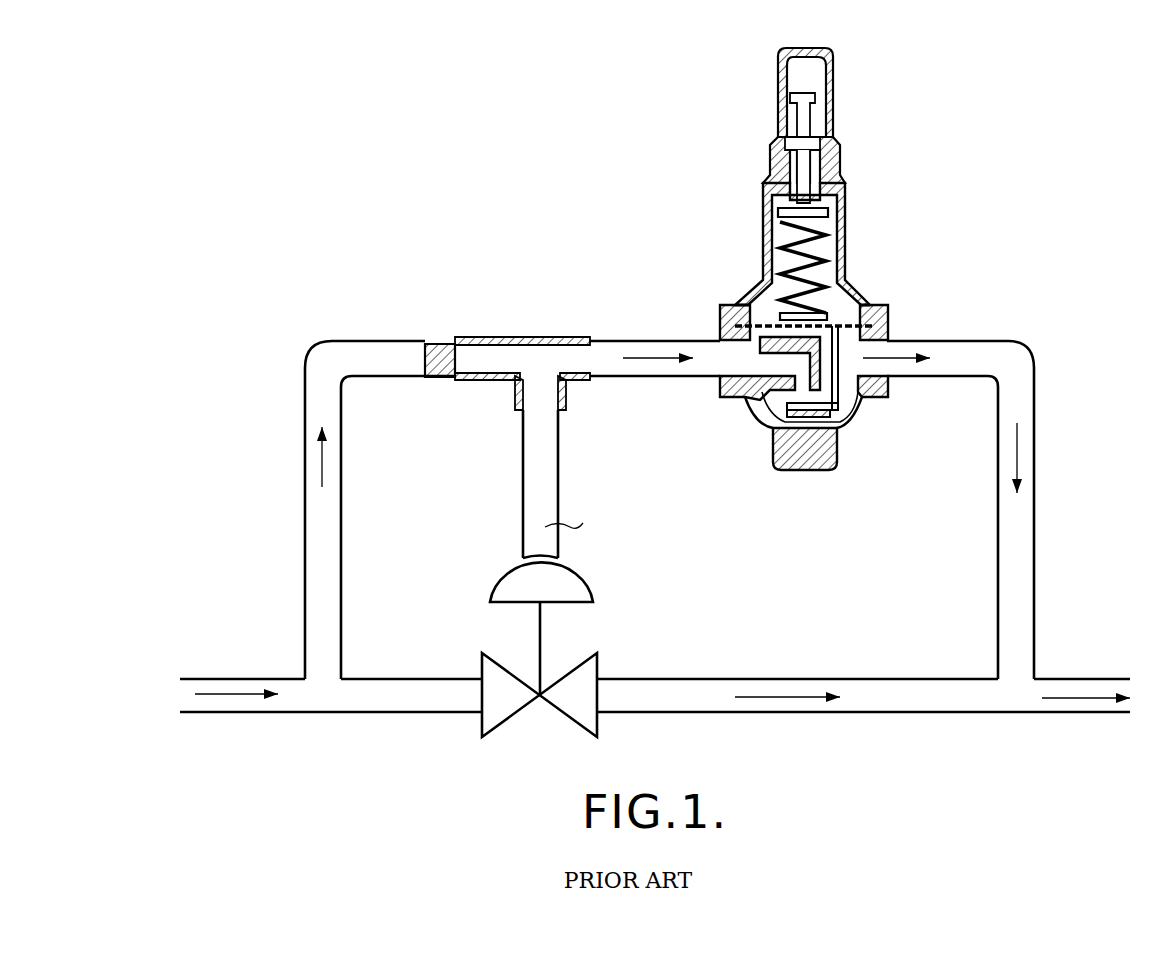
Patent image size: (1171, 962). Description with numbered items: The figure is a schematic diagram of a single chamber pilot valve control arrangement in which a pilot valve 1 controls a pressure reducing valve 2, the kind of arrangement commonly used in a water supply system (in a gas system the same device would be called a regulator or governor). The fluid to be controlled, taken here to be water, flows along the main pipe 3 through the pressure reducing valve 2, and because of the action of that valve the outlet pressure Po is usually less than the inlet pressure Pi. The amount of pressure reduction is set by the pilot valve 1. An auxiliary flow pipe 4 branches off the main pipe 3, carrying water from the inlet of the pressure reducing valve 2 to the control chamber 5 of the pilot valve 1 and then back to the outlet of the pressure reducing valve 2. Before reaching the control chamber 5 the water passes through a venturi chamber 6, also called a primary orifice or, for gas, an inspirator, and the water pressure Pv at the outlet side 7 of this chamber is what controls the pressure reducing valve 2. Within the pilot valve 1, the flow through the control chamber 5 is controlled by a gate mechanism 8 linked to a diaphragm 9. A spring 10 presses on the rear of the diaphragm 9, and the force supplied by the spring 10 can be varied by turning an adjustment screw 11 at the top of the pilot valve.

The pilot valve 1 is at (895, 145).
The pressure reducing valve 2 is at (588, 736).
The main pipe 3 is at (283, 716).
The auxiliary flow pipe 4 is at (303, 517).
The control chamber 5 is at (843, 417).
The venturi chamber 6 is at (447, 340).
The outlet side 7 is at (498, 358).
The gate mechanism 8 is at (765, 427).
The diaphragm 9 is at (851, 310).
The spring 10 is at (818, 245).
The adjustment screw 11 is at (800, 118).